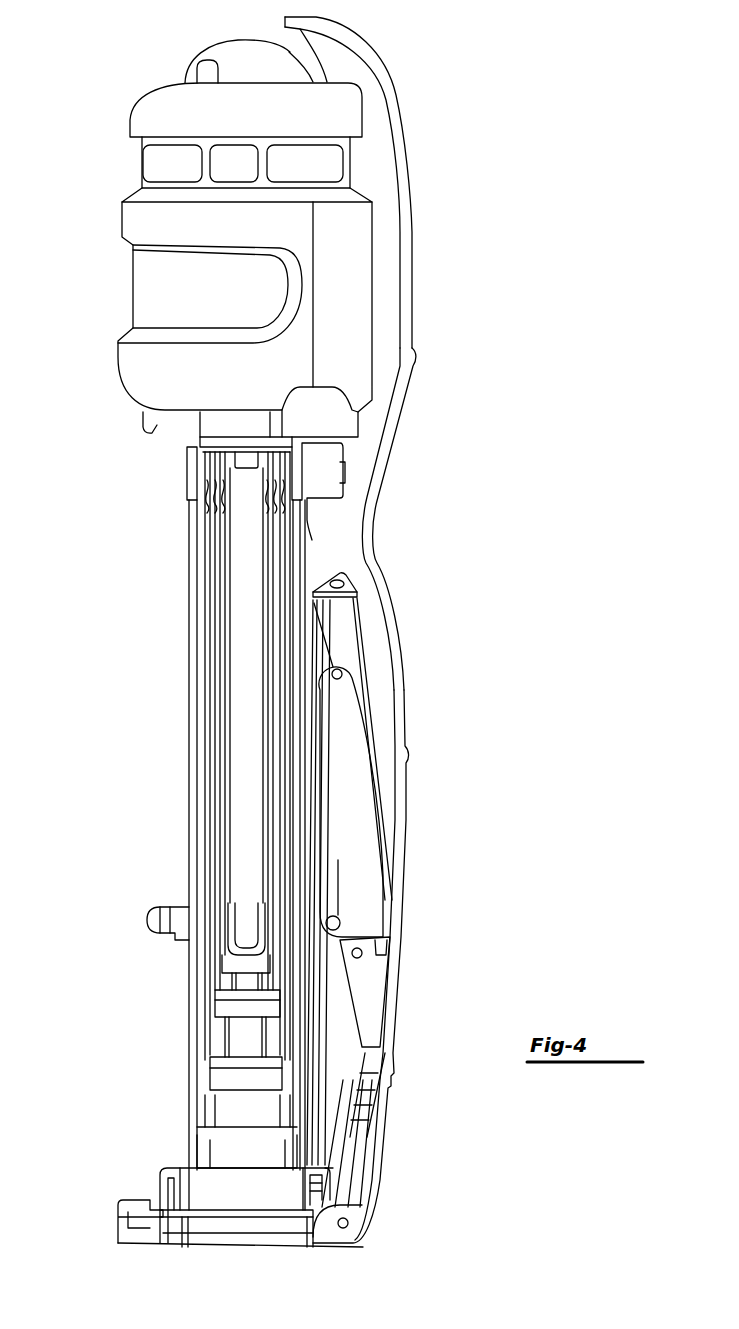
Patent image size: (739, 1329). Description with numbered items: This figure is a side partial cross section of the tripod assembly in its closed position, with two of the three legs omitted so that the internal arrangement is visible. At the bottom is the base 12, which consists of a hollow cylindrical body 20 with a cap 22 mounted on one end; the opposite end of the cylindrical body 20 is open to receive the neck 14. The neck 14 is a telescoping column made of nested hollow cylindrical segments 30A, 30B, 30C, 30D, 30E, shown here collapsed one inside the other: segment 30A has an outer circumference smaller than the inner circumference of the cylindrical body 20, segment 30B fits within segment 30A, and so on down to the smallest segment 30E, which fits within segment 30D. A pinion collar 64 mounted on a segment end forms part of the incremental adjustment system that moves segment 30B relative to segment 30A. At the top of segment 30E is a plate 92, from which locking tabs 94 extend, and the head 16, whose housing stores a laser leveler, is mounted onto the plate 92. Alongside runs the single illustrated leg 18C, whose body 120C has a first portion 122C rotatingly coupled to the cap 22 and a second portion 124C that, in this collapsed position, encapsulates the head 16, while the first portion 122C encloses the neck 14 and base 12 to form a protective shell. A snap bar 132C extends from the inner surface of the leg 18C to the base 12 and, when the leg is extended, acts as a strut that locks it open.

The head 16 is at (203, 62).
The first portion 122C is at (408, 222).
The plate 92 is at (158, 424).
The locking tabs 94 is at (362, 419).
The pinion collar 64 is at (186, 467).
The body 120C is at (403, 469).
The segment 30A is at (200, 593).
The segment 30B is at (212, 630).
The segment 30C is at (218, 677).
The segment 30D is at (227, 713).
The segment 30E is at (240, 767).
The neck portion 14 is at (185, 832).
The leg 18C is at (408, 630).
The second portion 124C is at (403, 777).
The snap bar 132C is at (357, 852).
The hollow cylindrical body 20 is at (187, 1021).
The base 12 is at (185, 1113).
The cap 22 is at (155, 1240).